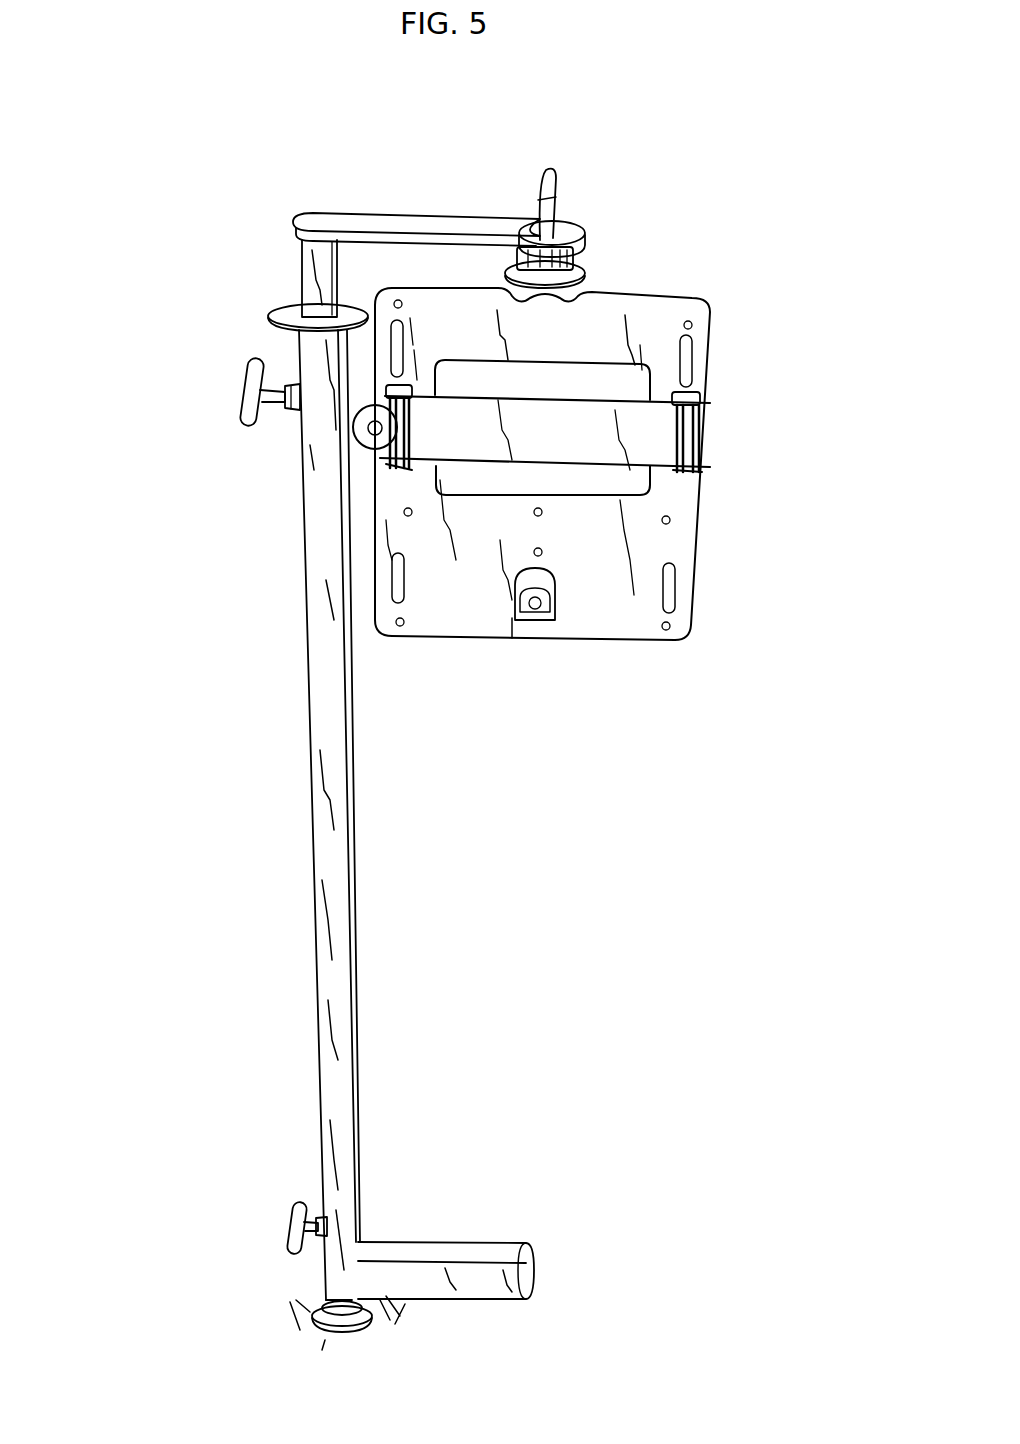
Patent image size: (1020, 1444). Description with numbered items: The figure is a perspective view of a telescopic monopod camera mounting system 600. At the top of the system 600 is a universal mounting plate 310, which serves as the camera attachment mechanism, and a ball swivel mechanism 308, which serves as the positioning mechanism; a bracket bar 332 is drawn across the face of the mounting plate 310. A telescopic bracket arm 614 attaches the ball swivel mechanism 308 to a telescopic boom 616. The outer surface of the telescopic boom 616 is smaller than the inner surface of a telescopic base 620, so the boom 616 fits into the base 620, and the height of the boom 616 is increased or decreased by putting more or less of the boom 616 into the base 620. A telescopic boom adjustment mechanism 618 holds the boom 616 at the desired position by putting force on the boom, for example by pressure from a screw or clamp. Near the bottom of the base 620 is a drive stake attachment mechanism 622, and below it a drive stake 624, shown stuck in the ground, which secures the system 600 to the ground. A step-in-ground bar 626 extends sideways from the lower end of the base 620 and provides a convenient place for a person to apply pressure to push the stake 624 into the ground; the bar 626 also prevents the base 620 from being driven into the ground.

The telescopic monopod camera mounting system 600 is at (205, 932).
The telescopic bracket arm 614 is at (430, 243).
The telescopic boom 616 is at (312, 255).
The telescopic boom adjustment mechanism 618 is at (258, 392).
The telescopic base 620 is at (318, 727).
The drive stake attachment mechanism 622 is at (320, 1218).
The drive stake 624 is at (320, 1310).
The step-in-ground bar 626 is at (450, 1258).
The ball swivel mechanism 308 is at (578, 248).
The universal mounting plate 310 is at (600, 332).
The bracket bar 332 is at (710, 440).